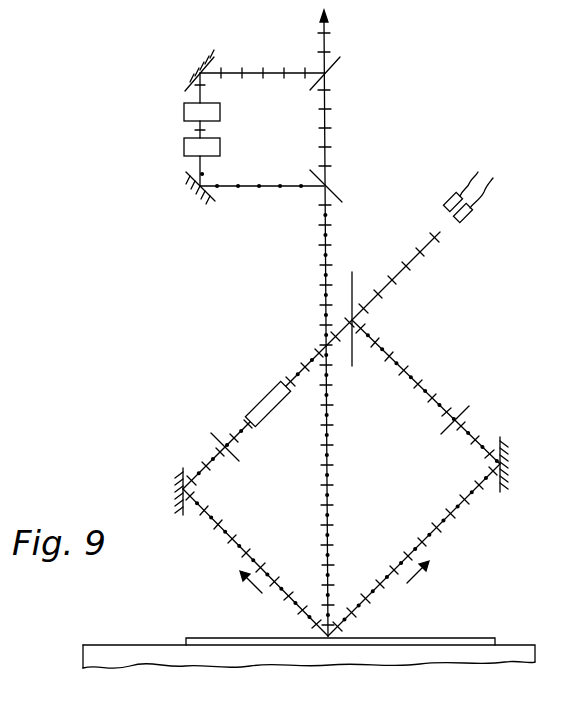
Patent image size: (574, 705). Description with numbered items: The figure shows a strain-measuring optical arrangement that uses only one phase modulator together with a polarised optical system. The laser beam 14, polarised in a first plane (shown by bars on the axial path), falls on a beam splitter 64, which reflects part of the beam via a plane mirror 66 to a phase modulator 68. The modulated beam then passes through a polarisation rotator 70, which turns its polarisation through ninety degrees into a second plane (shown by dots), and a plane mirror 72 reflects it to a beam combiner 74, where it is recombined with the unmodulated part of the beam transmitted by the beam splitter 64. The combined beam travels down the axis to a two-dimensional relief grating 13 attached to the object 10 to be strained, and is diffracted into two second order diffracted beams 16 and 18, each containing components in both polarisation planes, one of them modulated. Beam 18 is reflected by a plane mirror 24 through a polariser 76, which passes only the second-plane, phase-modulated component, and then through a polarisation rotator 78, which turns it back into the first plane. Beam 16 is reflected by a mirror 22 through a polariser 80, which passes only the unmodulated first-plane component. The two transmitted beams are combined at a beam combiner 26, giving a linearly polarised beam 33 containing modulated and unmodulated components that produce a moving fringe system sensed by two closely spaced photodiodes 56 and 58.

The object 10 is at (138, 652).
The two-dimensional relief grating 13 is at (226, 608).
The laser beam 14 is at (327, 37).
The second order diffracted beam 16 is at (432, 534).
The second order diffracted beam 18 is at (220, 536).
The plane mirror 22 is at (500, 438).
The plane mirror 24 is at (184, 468).
The beam combiner 26 is at (353, 274).
The laser beam 33 is at (412, 270).
The photodiode 56 is at (453, 196).
The photodiode 58 is at (470, 214).
The beam splitter 64 is at (338, 58).
The plane mirror 66 is at (208, 66).
The phase modulator 68 is at (184, 110).
The polarisation rotator 70 is at (184, 146).
The plane mirror 72 is at (214, 200).
The beam combiner 74 is at (332, 190).
The polariser 76 is at (228, 430).
The polarisation rotator 78 is at (268, 390).
The polariser 80 is at (466, 406).